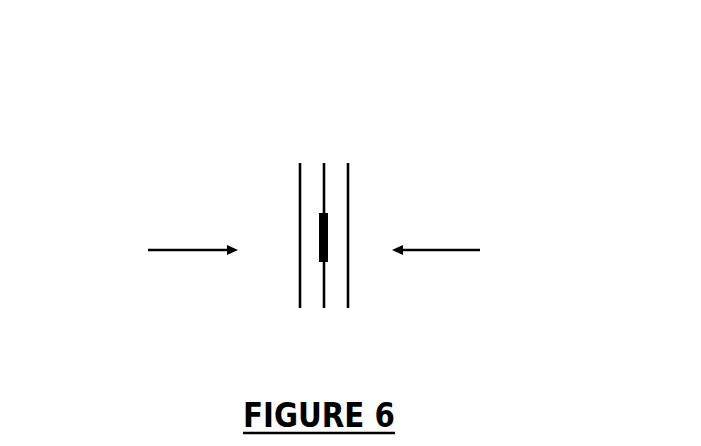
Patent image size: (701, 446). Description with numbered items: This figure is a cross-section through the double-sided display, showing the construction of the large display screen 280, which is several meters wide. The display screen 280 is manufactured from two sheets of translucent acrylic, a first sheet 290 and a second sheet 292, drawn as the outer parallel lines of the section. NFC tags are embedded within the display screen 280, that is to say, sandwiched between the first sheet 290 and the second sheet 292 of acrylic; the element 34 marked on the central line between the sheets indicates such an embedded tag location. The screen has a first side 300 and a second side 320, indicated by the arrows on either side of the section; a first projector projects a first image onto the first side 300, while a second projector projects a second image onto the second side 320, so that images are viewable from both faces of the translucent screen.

The display screen 280 is at (329, 153).
The first sheet of translucent acrylic 290 is at (314, 200).
The second sheet of translucent acrylic 292 is at (335, 199).
The first side 300 is at (162, 248).
The second side 320 is at (466, 248).
The absorbing element 34 is at (327, 247).